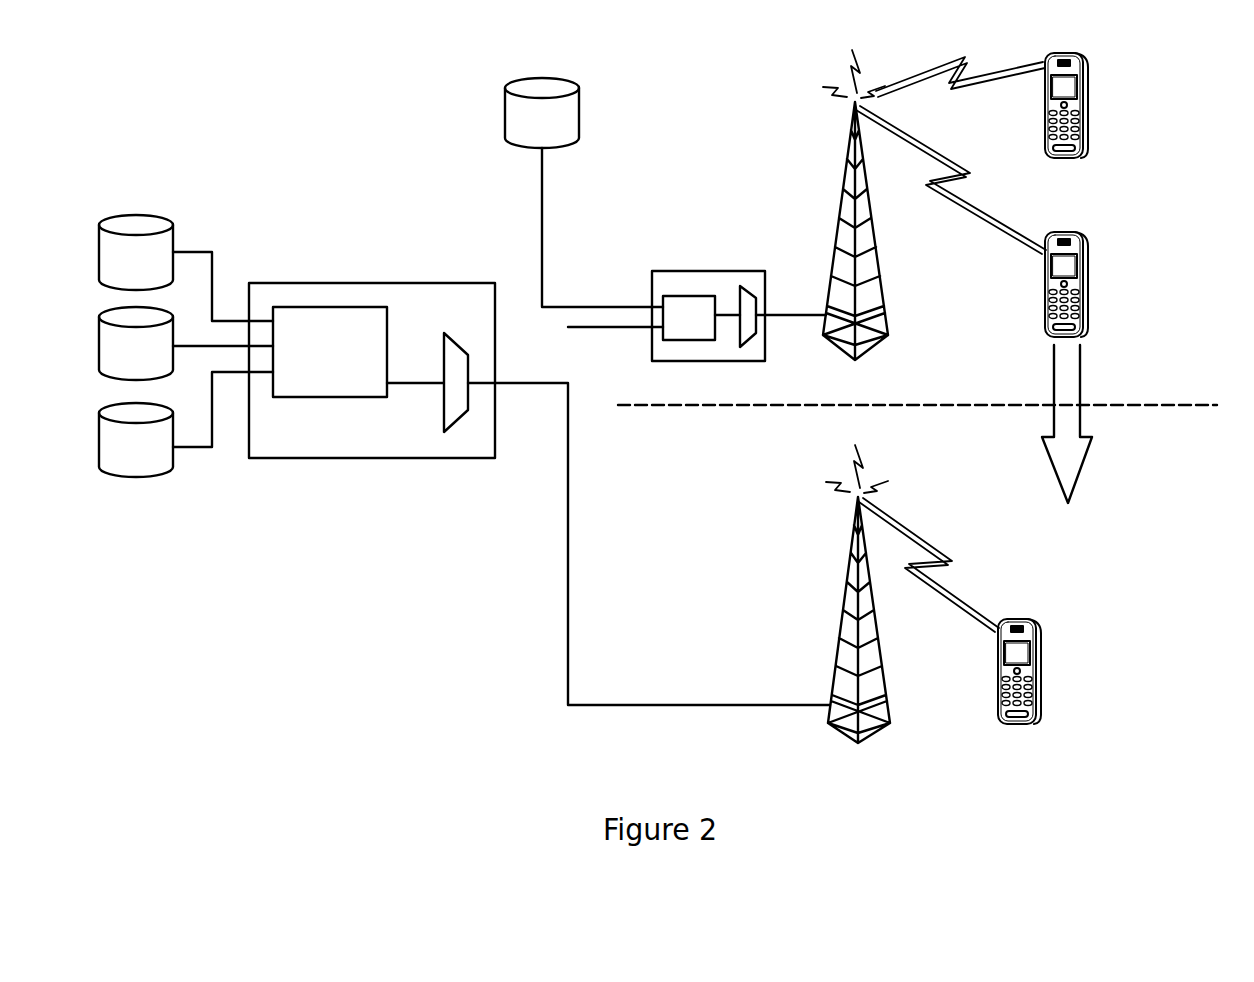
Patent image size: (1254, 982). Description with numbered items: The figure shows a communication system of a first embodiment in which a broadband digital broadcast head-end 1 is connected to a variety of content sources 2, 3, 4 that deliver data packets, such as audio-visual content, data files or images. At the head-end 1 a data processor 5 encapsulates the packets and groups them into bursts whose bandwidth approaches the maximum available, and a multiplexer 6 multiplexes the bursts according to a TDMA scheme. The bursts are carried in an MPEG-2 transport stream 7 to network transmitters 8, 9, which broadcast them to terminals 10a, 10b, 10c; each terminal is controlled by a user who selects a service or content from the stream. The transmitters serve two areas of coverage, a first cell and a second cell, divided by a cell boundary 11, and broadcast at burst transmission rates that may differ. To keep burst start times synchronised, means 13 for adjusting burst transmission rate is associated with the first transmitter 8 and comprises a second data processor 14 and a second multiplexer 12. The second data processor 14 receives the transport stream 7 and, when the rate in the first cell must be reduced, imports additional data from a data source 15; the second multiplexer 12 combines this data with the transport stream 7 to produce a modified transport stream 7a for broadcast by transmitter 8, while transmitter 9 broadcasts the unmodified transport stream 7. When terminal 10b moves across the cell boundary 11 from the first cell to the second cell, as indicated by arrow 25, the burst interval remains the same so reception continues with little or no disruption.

The broadband digital broadcast head-end 1 is at (305, 468).
The content source 2 is at (186, 268).
The content source 3 is at (186, 343).
The content source 4 is at (186, 424).
The data processor 5 is at (305, 303).
The multiplexer 6 is at (460, 432).
The transport stream 7 is at (538, 395).
The modified transport stream 7a is at (798, 307).
The network transmitter 8 is at (835, 140).
The network transmitter 9 is at (875, 758).
The terminal 10a is at (1095, 118).
The terminal 10b is at (1091, 288).
The terminal 10c is at (1052, 690).
The cell boundary 11 is at (1117, 412).
The second multiplexer 12 is at (749, 287).
The means for adjusting burst transmission rate 13 is at (700, 267).
The second data processor 14 is at (653, 288).
The data source 15 is at (584, 192).
The arrow 25 is at (1082, 493).